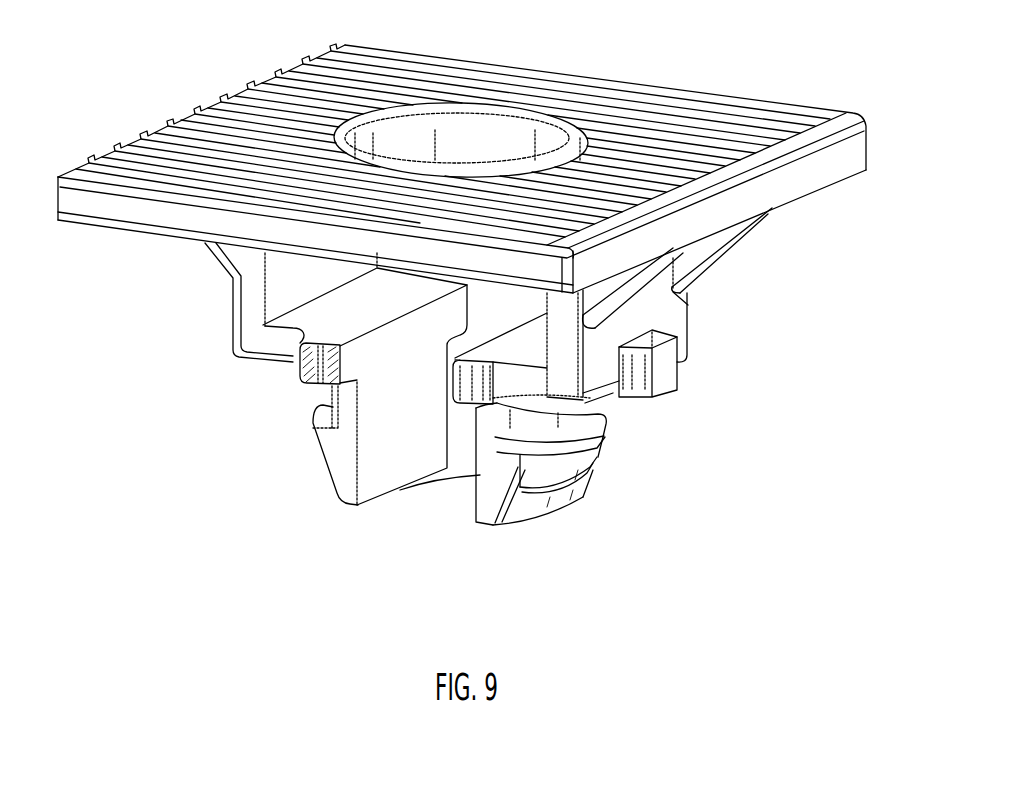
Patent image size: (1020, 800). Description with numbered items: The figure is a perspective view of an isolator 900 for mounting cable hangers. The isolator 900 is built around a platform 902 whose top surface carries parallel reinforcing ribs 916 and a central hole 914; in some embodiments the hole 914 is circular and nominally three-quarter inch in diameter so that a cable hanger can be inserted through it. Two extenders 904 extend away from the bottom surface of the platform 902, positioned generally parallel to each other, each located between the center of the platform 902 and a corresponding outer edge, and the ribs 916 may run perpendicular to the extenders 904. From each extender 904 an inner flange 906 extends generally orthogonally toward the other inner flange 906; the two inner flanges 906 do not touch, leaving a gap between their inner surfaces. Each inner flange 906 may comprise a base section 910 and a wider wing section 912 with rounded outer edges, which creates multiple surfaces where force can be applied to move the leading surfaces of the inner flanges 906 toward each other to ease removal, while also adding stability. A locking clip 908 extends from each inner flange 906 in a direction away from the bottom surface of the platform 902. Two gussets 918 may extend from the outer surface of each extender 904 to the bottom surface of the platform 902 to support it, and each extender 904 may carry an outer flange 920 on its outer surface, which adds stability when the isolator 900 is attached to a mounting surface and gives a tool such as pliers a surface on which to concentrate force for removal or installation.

The isolator 900 is at (752, 598).
The platform 902 is at (790, 107).
The extender 904 is at (247, 297).
The inner flange 906 is at (532, 380).
The locking clip 908 is at (345, 467).
The base section 910 is at (293, 327).
The wing section 912 is at (333, 334).
The central hole 914 is at (557, 143).
The reinforcing ribs 916 is at (345, 45).
The gusset 918 is at (627, 297).
The outer flange 920 is at (665, 378).